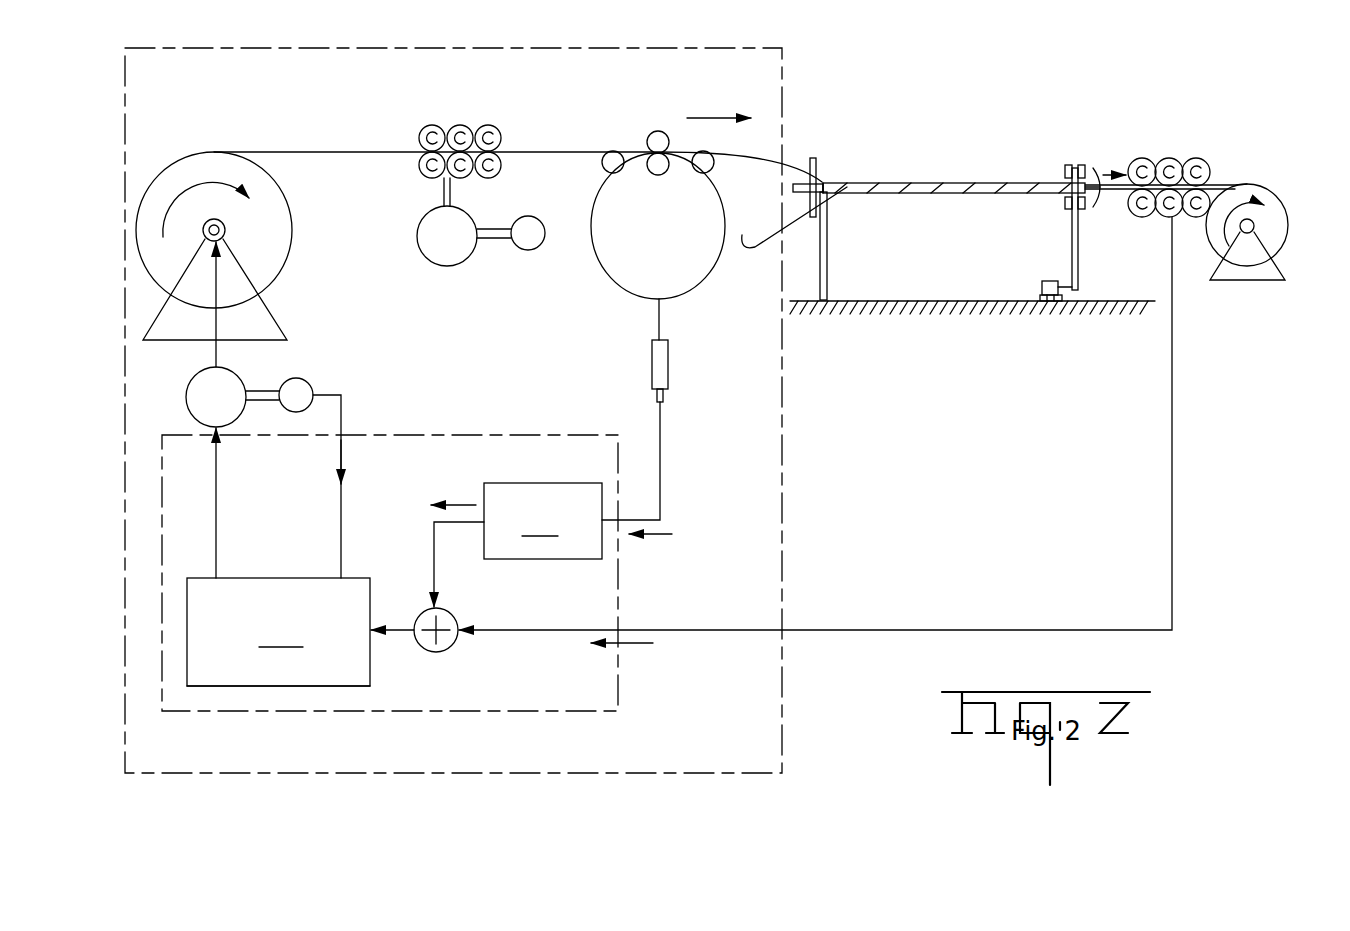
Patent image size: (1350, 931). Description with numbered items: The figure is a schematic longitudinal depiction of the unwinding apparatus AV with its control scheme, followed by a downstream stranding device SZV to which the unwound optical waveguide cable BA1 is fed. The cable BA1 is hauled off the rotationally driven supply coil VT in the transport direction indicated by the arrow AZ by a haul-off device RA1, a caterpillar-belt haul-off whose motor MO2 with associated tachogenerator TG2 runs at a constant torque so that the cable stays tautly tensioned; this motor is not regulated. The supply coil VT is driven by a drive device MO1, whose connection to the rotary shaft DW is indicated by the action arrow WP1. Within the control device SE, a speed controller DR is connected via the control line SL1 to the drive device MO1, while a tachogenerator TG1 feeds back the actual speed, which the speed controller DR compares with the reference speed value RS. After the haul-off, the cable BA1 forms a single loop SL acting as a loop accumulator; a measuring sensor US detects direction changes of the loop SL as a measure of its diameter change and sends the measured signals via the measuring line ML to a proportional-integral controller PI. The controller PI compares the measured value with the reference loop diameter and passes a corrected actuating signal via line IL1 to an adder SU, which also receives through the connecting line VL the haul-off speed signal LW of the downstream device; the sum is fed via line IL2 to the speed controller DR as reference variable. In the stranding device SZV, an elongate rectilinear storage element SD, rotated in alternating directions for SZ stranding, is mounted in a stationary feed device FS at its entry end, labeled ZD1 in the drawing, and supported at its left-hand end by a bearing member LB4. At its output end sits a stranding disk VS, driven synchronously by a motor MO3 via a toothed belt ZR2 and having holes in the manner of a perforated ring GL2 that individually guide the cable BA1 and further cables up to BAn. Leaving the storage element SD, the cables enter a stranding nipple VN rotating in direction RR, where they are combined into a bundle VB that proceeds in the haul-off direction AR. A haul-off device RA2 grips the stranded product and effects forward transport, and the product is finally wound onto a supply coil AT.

The unwinding apparatus AV is at (786, 91).
The control device SE is at (246, 713).
The supply coil VT is at (203, 150).
The rotary shaft DW is at (226, 230).
The action arrow WP1 is at (217, 308).
The drive device MO1 is at (192, 397).
The tachogenerator TG1 is at (294, 385).
The control line SL1 is at (216, 540).
The reference speed value RS is at (278, 632).
The speed controller DR is at (343, 675).
The controller PI is at (543, 521).
The adder SU is at (455, 640).
The line IL1 is at (434, 567).
The line IL2 is at (405, 633).
The connecting line VL is at (752, 632).
The haul-off speed signal LW is at (640, 643).
The measuring line ML is at (660, 468).
The haul-off device RA1 is at (457, 121).
The motor MO2 is at (447, 240).
The tachogenerator TG2 is at (532, 237).
The optical waveguide cable BA1 is at (330, 150).
The arrow AZ is at (721, 117).
The loop SL is at (724, 220).
The measuring sensor US is at (652, 370).
The optical cable BAn is at (768, 240).
The feed device FS is at (820, 168).
The first spindle end ZD1 is at (823, 180).
The bearing member LB4 is at (827, 260).
The storage element SD is at (942, 182).
The toothed belt ZR2 is at (1072, 230).
The perforated ring GL2 is at (1065, 172).
The stranding disk VS is at (1073, 167).
The motor MO3 is at (1043, 283).
The direction of rotation RR is at (1093, 170).
The haul-off direction AR is at (1112, 172).
The stranding nipple VN is at (1120, 190).
The bundle VB is at (1114, 193).
The haul-off device RA2 is at (1189, 154).
The supply coil AT is at (1277, 188).
The stranding device SZV is at (961, 319).